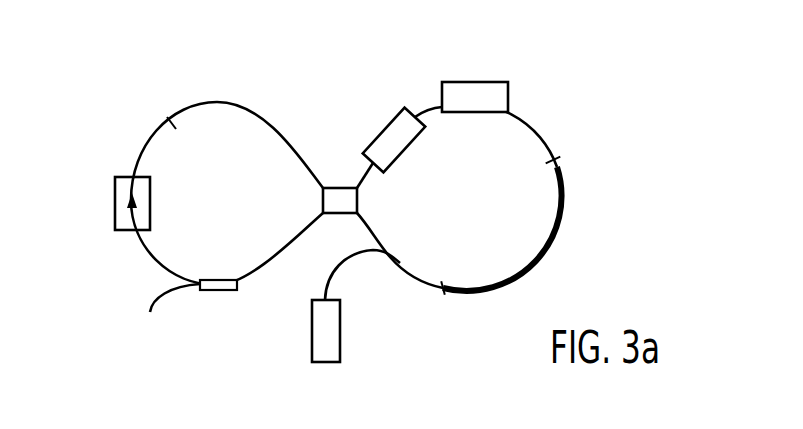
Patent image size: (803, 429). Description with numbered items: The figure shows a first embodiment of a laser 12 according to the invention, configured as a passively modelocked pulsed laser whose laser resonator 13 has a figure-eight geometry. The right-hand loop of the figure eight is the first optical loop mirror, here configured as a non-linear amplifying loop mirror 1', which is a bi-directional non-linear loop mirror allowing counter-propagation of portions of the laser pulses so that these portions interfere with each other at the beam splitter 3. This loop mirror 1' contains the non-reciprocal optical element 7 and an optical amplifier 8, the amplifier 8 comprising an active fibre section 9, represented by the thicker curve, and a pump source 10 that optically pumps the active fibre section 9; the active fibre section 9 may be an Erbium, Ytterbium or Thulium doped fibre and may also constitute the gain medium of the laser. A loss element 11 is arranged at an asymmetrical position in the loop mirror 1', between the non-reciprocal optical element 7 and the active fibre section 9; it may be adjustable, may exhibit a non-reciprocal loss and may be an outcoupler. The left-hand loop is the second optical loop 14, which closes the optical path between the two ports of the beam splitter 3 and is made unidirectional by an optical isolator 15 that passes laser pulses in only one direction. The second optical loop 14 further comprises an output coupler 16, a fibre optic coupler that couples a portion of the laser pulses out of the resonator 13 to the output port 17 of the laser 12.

The non-linear amplifying loop mirror 1' is at (506, 102).
The beam splitter 3 is at (342, 198).
The non-reciprocal optical element 7 is at (388, 145).
The optical amplifier 8 is at (587, 227).
The active fibre section 9 is at (513, 289).
The pump source 10 is at (328, 333).
The loss element 11 is at (482, 95).
The laser 12 is at (90, 106).
The laser resonator 13 is at (304, 105).
The second optical loop 14 is at (200, 103).
The optical isolator 15 is at (143, 185).
The output coupler 16 is at (224, 290).
The output port 17 is at (163, 292).